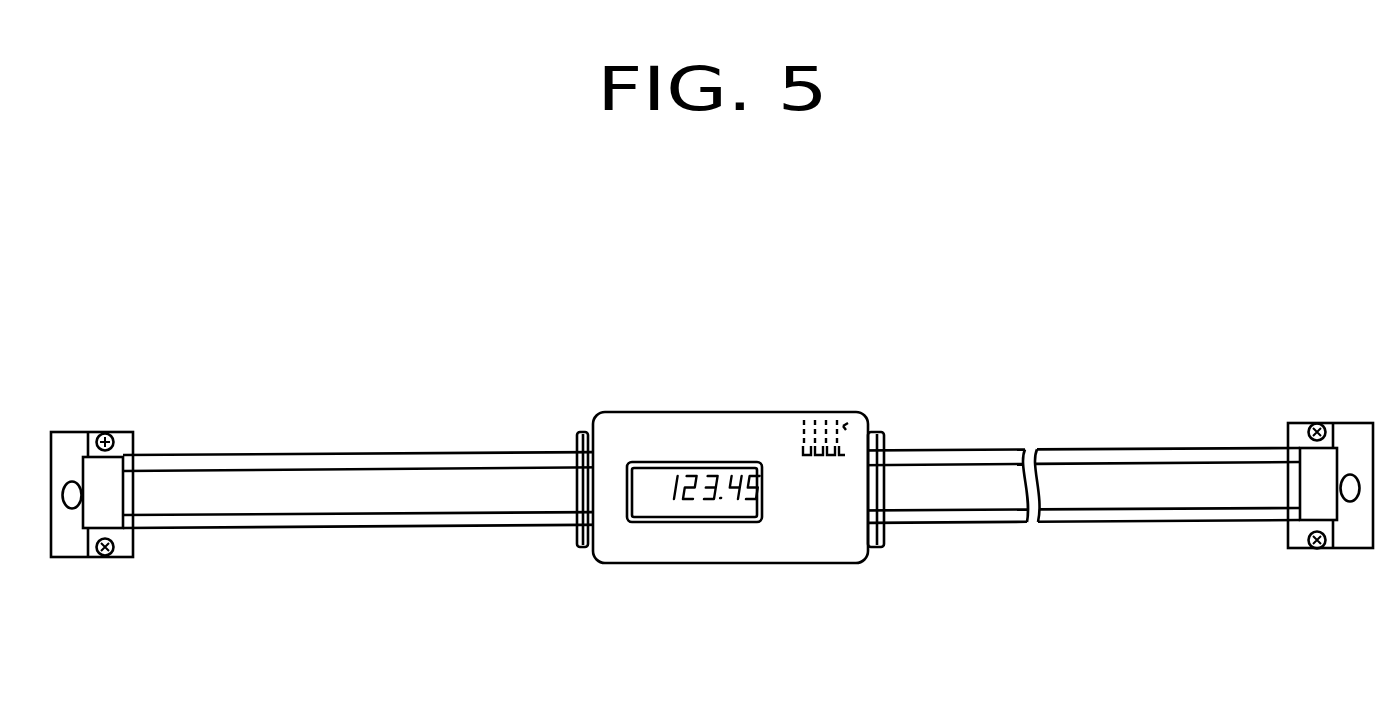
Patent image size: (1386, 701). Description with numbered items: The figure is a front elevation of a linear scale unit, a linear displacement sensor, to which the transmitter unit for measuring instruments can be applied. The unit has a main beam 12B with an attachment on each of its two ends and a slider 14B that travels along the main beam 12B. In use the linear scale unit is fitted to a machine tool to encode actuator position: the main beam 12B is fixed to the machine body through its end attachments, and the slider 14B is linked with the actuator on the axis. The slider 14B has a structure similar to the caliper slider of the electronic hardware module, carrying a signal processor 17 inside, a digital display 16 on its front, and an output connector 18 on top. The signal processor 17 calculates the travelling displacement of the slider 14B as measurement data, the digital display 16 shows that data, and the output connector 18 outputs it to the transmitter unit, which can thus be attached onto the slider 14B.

The main beam 12B is at (1091, 517).
The slider 14B is at (822, 564).
The digital display 16 is at (648, 462).
The signal processor 17 is at (660, 545).
The output connector 18 is at (855, 413).